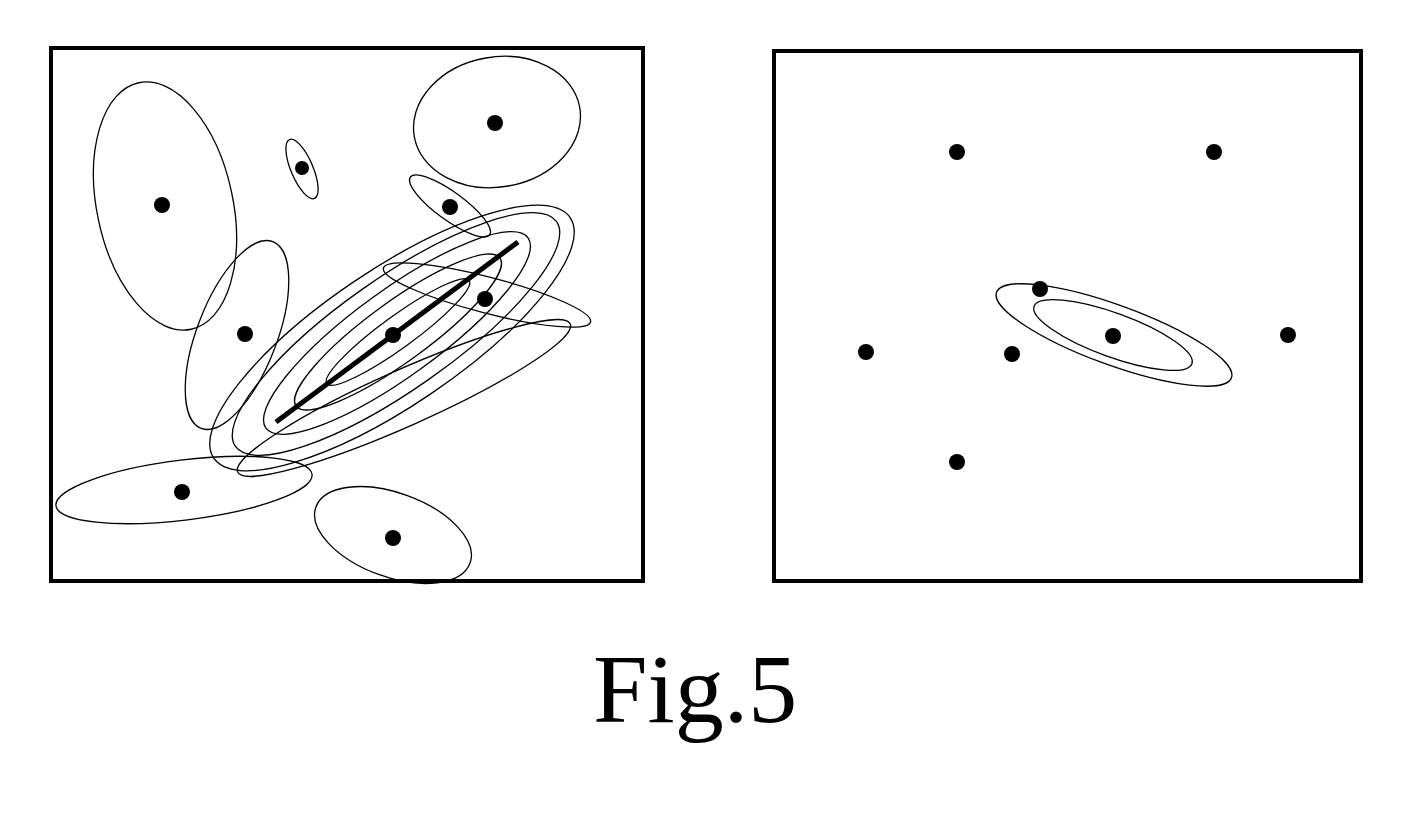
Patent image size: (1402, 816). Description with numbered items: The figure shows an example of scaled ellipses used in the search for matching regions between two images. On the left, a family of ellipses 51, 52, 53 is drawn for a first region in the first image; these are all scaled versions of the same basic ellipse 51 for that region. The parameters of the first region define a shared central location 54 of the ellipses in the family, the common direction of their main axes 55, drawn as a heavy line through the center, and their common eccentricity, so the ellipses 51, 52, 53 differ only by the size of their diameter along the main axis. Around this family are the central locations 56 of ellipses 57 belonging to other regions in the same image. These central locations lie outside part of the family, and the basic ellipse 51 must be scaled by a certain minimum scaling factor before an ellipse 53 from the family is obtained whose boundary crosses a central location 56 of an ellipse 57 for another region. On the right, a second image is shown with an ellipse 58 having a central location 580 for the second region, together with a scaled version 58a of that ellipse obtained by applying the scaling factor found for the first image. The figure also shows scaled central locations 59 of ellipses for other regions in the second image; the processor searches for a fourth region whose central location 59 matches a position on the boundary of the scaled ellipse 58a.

The basic ellipse 51 is at (392, 345).
The ellipse 52 is at (352, 388).
The ellipse 53 is at (328, 428).
The shared central location 54 is at (440, 370).
The main axes 55 is at (553, 275).
The central locations 56 is at (164, 198).
The ellipses 57 is at (183, 102).
The ellipse 58 is at (1150, 370).
The scaled version of ellipse 58a is at (1212, 380).
The scaled central locations 59 is at (958, 144).
The central location 580 is at (1115, 327).